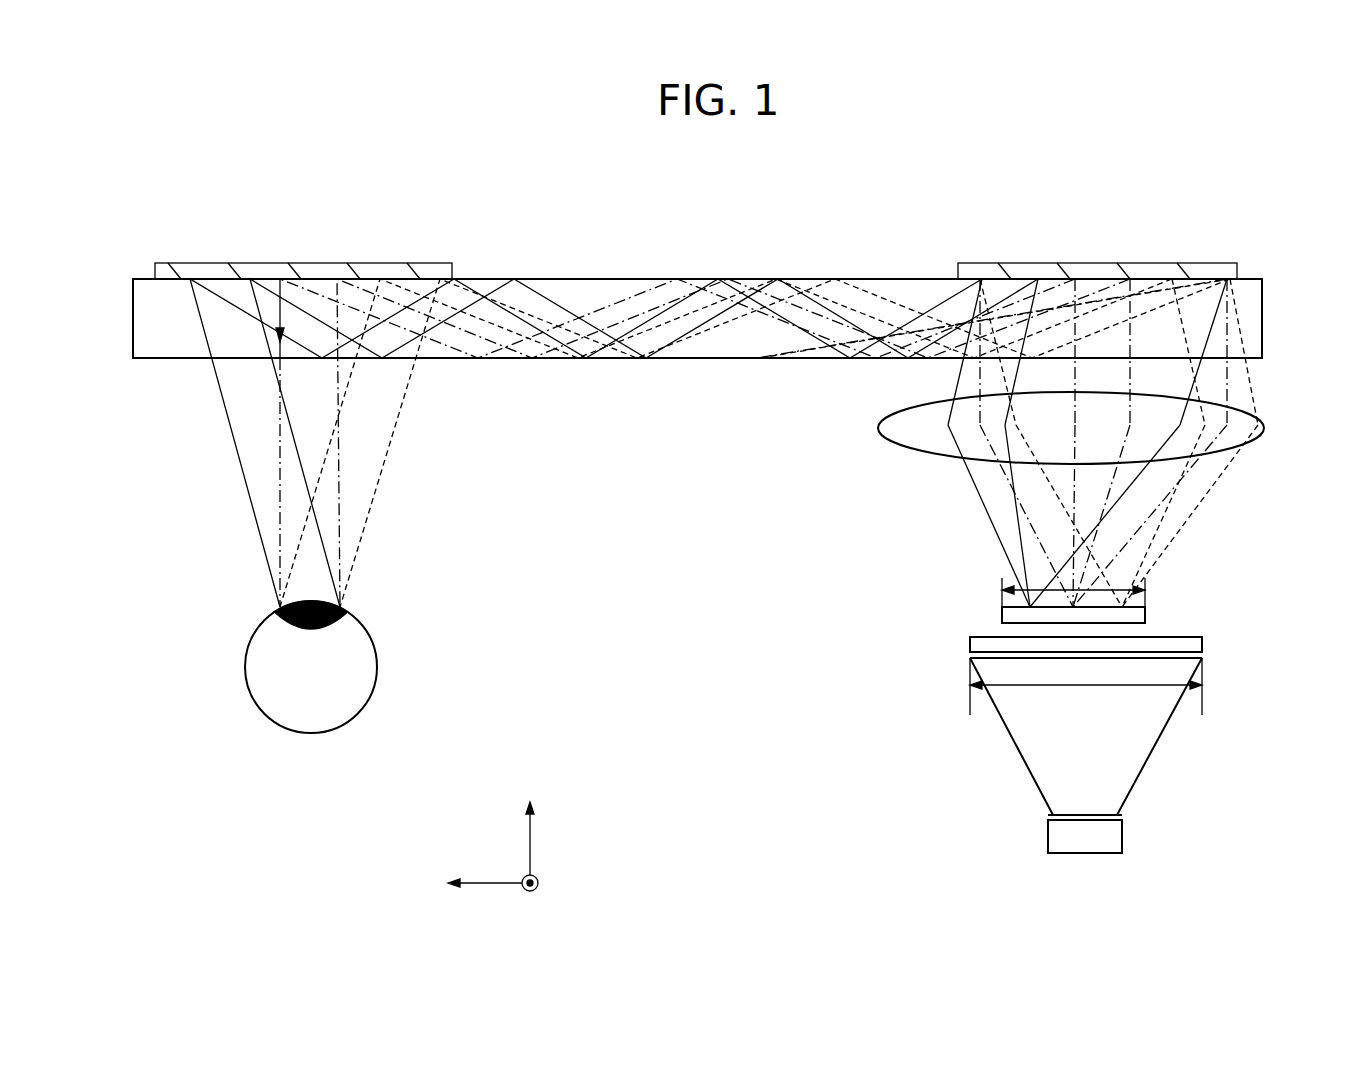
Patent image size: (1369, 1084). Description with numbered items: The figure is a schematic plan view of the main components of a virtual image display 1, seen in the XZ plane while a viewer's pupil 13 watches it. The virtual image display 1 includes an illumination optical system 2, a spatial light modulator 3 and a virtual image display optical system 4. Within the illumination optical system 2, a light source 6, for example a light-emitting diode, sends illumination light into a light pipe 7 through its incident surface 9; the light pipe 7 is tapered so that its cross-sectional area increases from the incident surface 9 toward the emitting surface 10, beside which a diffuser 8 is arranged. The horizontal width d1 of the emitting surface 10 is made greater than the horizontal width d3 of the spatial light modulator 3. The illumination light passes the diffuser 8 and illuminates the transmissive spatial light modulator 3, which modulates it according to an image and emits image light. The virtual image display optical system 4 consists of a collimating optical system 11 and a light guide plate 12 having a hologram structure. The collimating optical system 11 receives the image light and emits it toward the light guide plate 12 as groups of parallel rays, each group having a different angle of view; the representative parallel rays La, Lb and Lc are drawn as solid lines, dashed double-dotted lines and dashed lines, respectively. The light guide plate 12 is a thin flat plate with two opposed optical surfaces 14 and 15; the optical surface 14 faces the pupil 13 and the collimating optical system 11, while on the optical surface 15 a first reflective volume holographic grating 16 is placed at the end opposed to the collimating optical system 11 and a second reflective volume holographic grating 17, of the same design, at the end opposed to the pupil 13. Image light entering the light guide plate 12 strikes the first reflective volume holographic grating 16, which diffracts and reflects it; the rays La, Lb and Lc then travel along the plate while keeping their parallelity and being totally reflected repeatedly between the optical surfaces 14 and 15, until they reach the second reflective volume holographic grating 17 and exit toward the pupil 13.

The virtual image display 1 is at (921, 148).
The illumination optical system 2 is at (1092, 776).
The spatial light modulator 3 is at (1133, 615).
The virtual image display optical system 4 is at (710, 237).
The light source 6 is at (1085, 847).
The light pipe 7 is at (1140, 753).
The diffuser 8 is at (1197, 645).
The incident surface 9 is at (1139, 813).
The emitting surface 10 is at (1216, 676).
The collimating optical system 11 is at (1222, 458).
The light guide plate 12 is at (720, 360).
The pupil 13 is at (368, 666).
The optical surface 14 is at (561, 364).
The optical surface 15 is at (592, 276).
The first reflective volume holographic grating 16 is at (1138, 268).
The second reflective volume holographic grating 17 is at (318, 270).
The parallel ray La is at (940, 293).
The parallel ray Lb is at (1077, 337).
The parallel ray Lc is at (1242, 338).
The width of the emitting surface in the horizontal direction d1 is at (1086, 703).
The width of the spatial light modulator in the horizontal direction d3 is at (1113, 583).